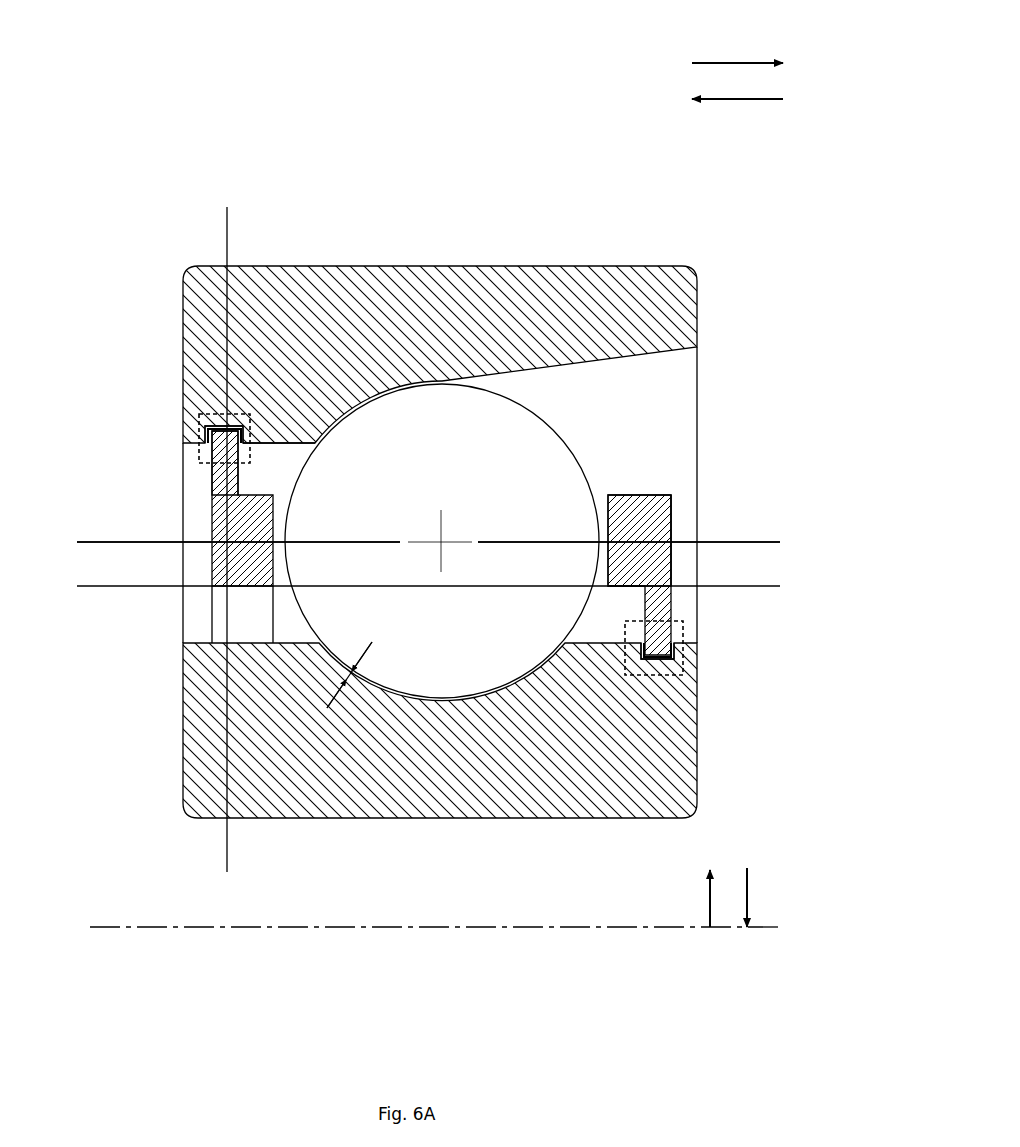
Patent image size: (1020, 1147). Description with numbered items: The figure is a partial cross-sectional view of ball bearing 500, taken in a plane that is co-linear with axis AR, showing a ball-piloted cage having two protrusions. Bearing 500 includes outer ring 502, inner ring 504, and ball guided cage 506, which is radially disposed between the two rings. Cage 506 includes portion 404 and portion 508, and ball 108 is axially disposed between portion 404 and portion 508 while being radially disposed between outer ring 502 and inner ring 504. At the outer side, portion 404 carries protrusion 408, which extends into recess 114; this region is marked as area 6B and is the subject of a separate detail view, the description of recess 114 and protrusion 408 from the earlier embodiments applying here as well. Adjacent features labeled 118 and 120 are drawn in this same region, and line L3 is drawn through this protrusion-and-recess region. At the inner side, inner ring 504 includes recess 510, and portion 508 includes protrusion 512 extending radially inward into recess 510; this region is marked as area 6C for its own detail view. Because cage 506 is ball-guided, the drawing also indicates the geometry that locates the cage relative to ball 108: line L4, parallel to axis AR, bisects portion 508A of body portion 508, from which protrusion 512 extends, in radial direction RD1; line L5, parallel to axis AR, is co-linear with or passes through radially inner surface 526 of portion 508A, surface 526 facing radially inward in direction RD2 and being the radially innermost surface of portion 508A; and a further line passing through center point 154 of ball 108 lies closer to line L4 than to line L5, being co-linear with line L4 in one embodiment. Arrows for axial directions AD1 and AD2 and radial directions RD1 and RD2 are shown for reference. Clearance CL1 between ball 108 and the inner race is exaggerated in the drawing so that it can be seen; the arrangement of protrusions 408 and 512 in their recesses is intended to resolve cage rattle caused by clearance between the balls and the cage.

The ball bearing 500 is at (645, 209).
The outer ring 502 is at (497, 262).
The inner ring 504 is at (681, 824).
The ball guided cage 506 is at (681, 492).
The portion 508 is at (641, 491).
The portion 508A is at (653, 562).
The recess 510 is at (640, 657).
The protrusion 512 is at (668, 644).
The radially inner surface 526 is at (621, 588).
The ball 108 is at (558, 423).
The recess 114 is at (236, 428).
The clip 118 is at (183, 428).
The housing surface 120 is at (270, 443).
The center point 154 is at (441, 542).
The portion 404 is at (209, 521).
The protrusion 408 is at (203, 455).
The area 6B is at (199, 412).
The area 6C is at (686, 680).
The line L3 is at (227, 245).
The line L4 is at (93, 542).
The line L5 is at (105, 586).
The clearance CL1 is at (360, 660).
The axis AR is at (193, 925).
The axial direction AD1 is at (742, 63).
The axial direction AD2 is at (758, 99).
The radial direction RD1 is at (710, 903).
The radial direction RD2 is at (747, 903).